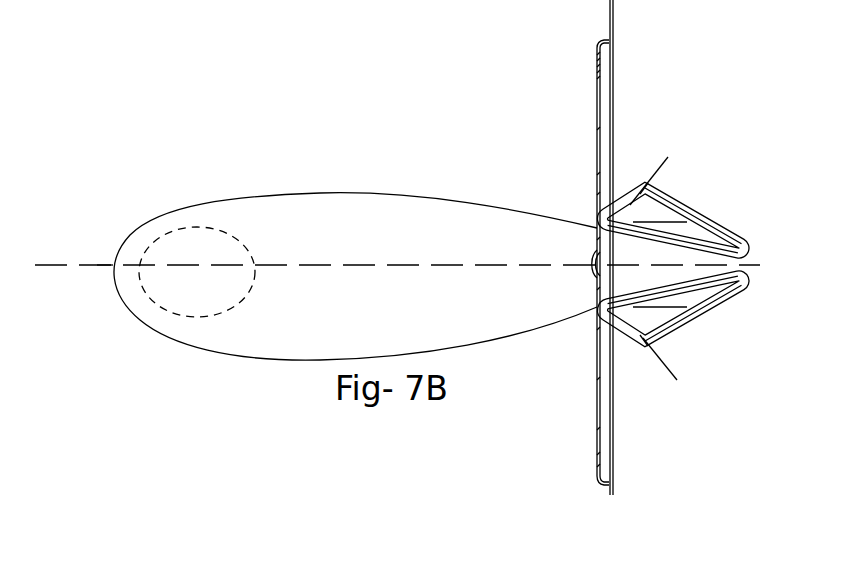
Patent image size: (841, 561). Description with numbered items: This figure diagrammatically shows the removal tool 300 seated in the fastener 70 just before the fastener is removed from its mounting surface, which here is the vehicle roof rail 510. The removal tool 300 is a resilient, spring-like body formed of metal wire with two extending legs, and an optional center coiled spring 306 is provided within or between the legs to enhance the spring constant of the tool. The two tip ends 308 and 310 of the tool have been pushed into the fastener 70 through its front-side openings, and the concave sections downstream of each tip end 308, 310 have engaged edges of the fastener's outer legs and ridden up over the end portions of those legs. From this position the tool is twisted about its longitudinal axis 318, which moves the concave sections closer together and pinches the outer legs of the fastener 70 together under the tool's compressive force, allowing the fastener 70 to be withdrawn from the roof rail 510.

The fastener 70 is at (597, 125).
The removal tool 300 is at (290, 196).
The center coiled spring 306 is at (183, 311).
The tip end 308 is at (663, 170).
The tip end 310 is at (652, 348).
The longitudinal axis 318 is at (95, 265).
The vehicle roof rail 510 is at (613, 89).